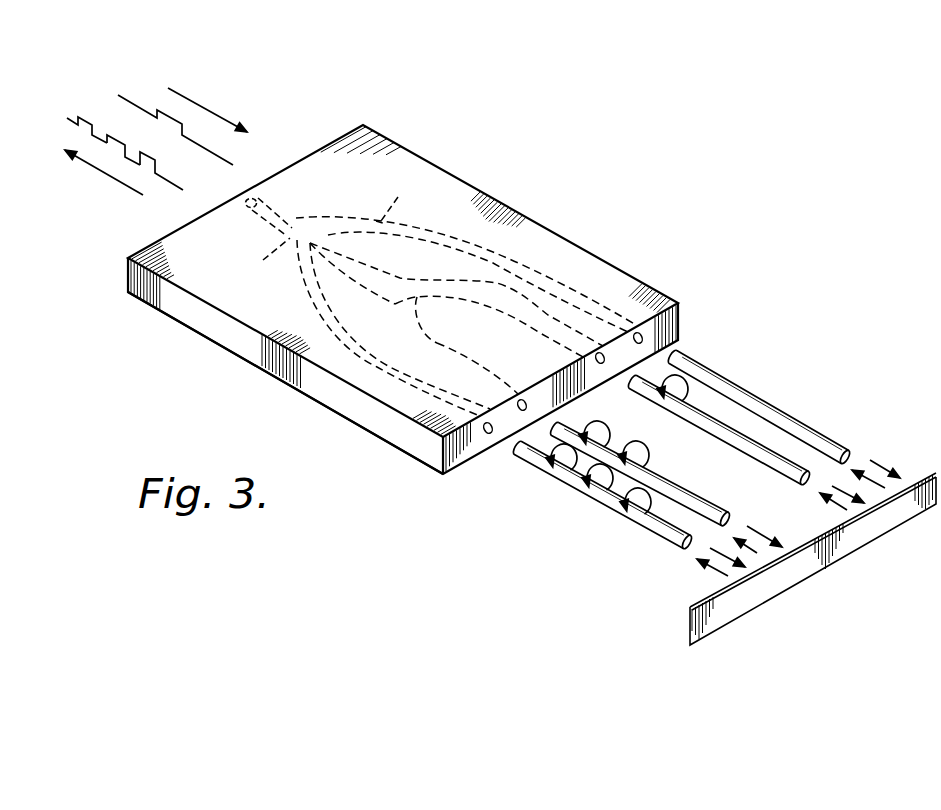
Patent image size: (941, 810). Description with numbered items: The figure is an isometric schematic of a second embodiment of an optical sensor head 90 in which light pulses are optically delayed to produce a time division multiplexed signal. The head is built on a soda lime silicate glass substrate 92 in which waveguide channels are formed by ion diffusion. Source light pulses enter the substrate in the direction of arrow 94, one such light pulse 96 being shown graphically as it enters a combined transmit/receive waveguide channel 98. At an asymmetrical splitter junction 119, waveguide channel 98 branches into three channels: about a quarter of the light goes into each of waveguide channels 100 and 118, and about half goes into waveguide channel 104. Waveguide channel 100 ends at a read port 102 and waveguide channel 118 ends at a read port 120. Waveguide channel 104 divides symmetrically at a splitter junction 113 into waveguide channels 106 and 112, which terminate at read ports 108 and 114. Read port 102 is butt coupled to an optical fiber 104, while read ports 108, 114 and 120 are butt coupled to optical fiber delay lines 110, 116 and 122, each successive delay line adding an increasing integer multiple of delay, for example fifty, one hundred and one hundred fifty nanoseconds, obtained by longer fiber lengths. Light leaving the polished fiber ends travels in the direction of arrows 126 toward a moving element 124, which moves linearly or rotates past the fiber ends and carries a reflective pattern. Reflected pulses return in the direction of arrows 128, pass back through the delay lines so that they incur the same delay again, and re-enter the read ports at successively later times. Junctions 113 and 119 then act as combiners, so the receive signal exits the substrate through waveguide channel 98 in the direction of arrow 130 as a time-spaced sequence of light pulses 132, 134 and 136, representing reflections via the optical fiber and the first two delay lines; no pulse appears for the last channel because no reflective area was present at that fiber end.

The optical sensor head 90 is at (212, 346).
The soda lime silicate glass substrate 92 is at (330, 393).
The arrow 94 is at (207, 110).
The light pulse 96 is at (168, 112).
The combined transmit/receive waveguide channel 98 is at (281, 216).
The combined transmit/receive waveguide channel 100 is at (399, 195).
The read port 102 is at (647, 337).
The waveguide channel / optical fiber 104 is at (358, 250).
The combined transmit/receive waveguide channel 106 is at (506, 287).
The read port 108 is at (601, 364).
The optical fiber delay line 110 is at (730, 439).
The combined transmit/receive waveguide channel 112 is at (440, 343).
The splitter junction 113 is at (374, 288).
The read port 114 is at (522, 411).
The optical fiber delay line 116 is at (688, 498).
The combined transmit/receive waveguide channel 118 is at (335, 312).
The asymmetrical splitter junction 119 is at (252, 261).
The read port 120 is at (488, 434).
The optical fiber delay line 122 is at (604, 512).
The moving element 124 is at (735, 612).
The arrows 126 is at (888, 472).
The arrows 128 is at (880, 483).
The arrow 130 is at (106, 177).
The light pulse 132 is at (85, 112).
The light pulse 134 is at (130, 130).
The light pulse 136 is at (155, 158).